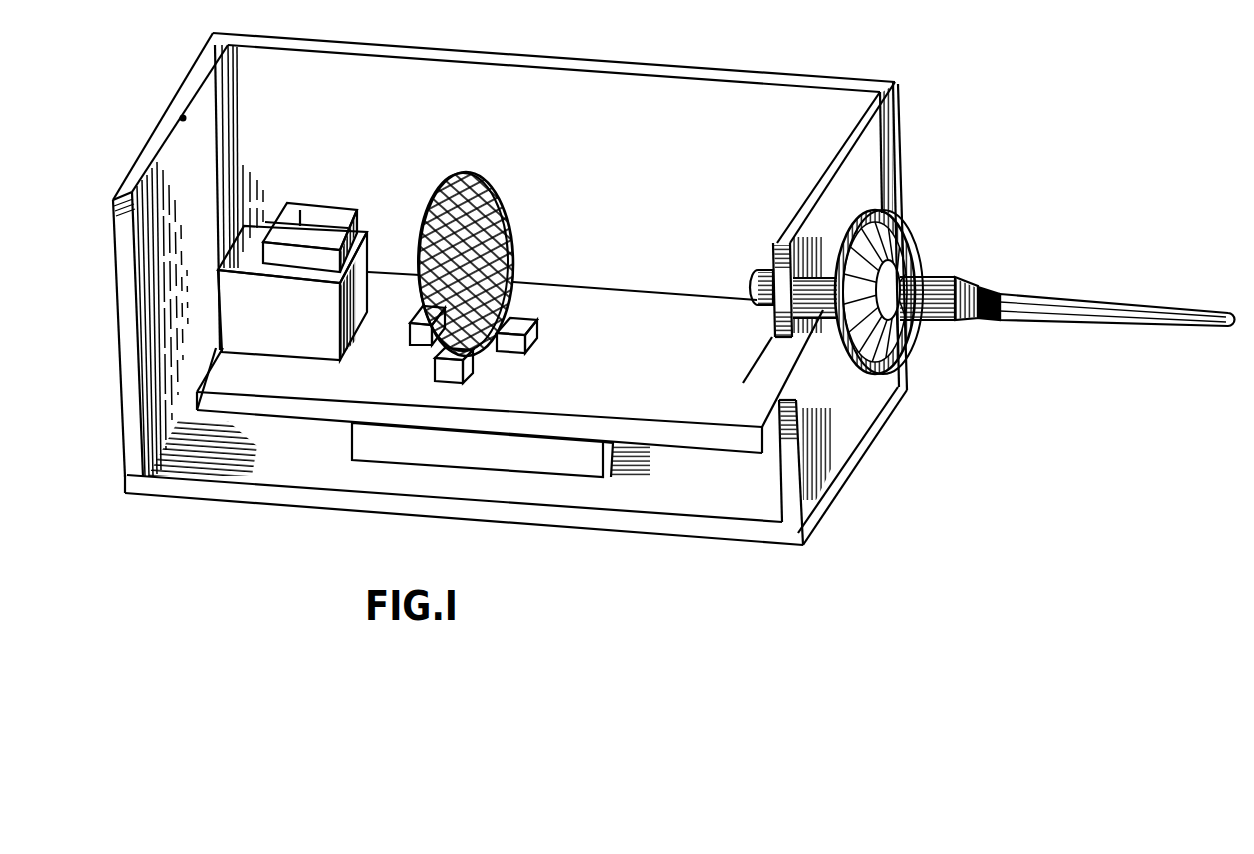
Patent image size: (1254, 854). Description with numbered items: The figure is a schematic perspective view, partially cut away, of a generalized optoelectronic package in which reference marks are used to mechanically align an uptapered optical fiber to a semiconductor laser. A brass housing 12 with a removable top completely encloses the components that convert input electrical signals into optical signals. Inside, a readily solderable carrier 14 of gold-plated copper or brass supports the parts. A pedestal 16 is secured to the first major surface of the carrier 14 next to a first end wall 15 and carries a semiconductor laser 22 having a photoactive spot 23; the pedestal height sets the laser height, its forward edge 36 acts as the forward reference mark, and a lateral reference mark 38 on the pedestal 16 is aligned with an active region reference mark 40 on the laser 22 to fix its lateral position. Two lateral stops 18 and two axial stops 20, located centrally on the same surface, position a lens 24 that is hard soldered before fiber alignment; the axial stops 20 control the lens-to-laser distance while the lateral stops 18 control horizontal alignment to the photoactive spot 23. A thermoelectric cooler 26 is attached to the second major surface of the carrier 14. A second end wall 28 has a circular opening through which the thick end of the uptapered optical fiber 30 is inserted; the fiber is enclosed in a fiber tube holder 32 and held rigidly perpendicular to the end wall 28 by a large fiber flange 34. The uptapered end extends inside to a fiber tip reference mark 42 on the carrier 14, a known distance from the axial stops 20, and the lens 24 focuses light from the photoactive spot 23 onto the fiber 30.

The housing 12 is at (728, 67).
The carrier 14 is at (660, 436).
The first end wall 15 is at (133, 163).
The pedestal 16 is at (307, 341).
The lateral stops 18 is at (483, 356).
The axial stops 20 is at (423, 333).
The semiconductor laser 22 is at (330, 208).
The photoactive spot 23 is at (370, 236).
The lens 24 is at (508, 200).
The thermoelectric cooler 26 is at (559, 460).
The second end wall 28 is at (898, 157).
The uptapered optical fiber 30 is at (973, 278).
The fiber tube holder 32 is at (913, 266).
The fiber flange 34 is at (902, 220).
The forward edge 36 is at (349, 297).
The lateral reference mark 38 is at (185, 117).
The active region reference mark 40 is at (300, 212).
The fiber tip reference mark 42 is at (750, 369).